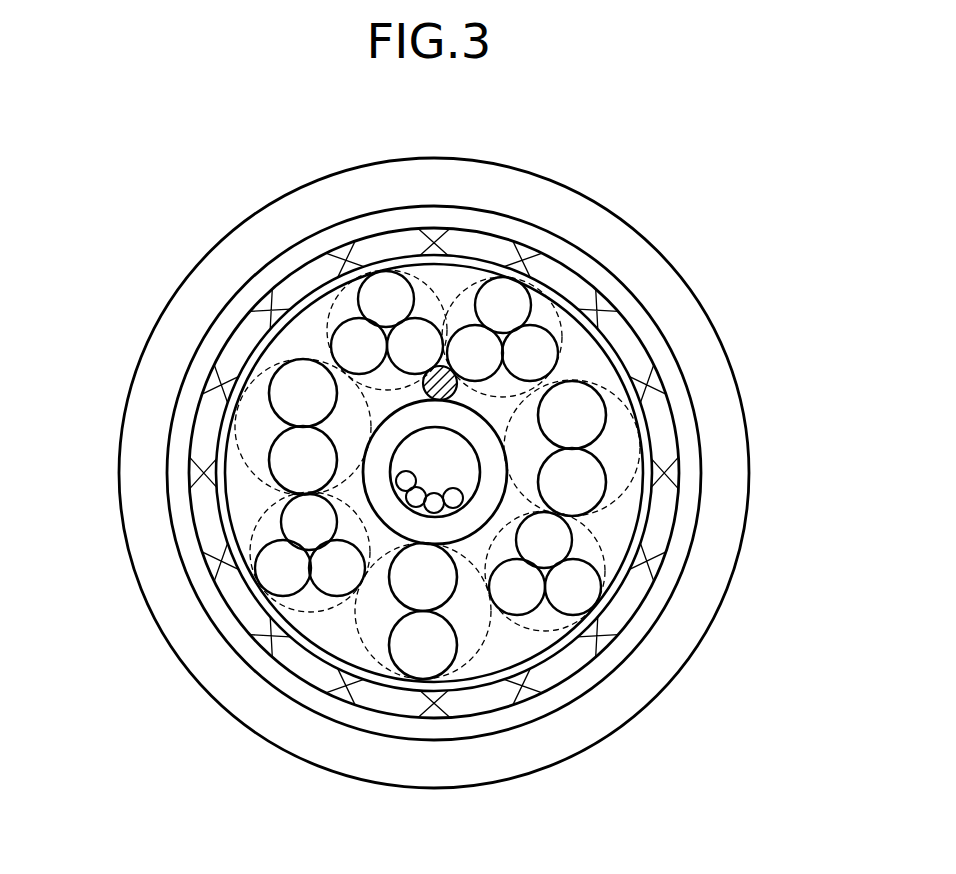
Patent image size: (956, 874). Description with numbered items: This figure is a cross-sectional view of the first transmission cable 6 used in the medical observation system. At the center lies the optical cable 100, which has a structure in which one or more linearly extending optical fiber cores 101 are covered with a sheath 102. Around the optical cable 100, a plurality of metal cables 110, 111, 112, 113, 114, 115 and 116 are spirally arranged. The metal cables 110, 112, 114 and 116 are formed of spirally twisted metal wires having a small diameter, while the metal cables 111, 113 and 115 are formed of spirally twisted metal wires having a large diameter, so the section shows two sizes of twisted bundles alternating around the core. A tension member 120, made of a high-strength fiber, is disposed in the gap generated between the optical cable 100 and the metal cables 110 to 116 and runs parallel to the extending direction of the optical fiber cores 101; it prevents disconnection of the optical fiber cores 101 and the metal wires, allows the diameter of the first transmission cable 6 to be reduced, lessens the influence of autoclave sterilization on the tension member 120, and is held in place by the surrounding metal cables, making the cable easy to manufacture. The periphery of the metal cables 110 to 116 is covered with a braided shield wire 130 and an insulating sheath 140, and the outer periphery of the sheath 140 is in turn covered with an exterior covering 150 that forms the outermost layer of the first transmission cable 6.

The first transmission cable 6 is at (678, 157).
The optical cable 100 is at (365, 510).
The optical fiber cores 101 is at (457, 497).
The sheath 102 is at (413, 523).
The metal cable 110 is at (460, 295).
The metal cable 111 is at (604, 383).
The metal cable 112 is at (602, 542).
The metal cable 113 is at (488, 648).
The metal cable 114 is at (262, 518).
The metal cable 115 is at (285, 365).
The metal cable 116 is at (334, 330).
The tension member 120 is at (421, 388).
The braided shield wire 130 is at (680, 470).
The insulating sheath 140 is at (702, 508).
The exterior covering 150 is at (702, 652).